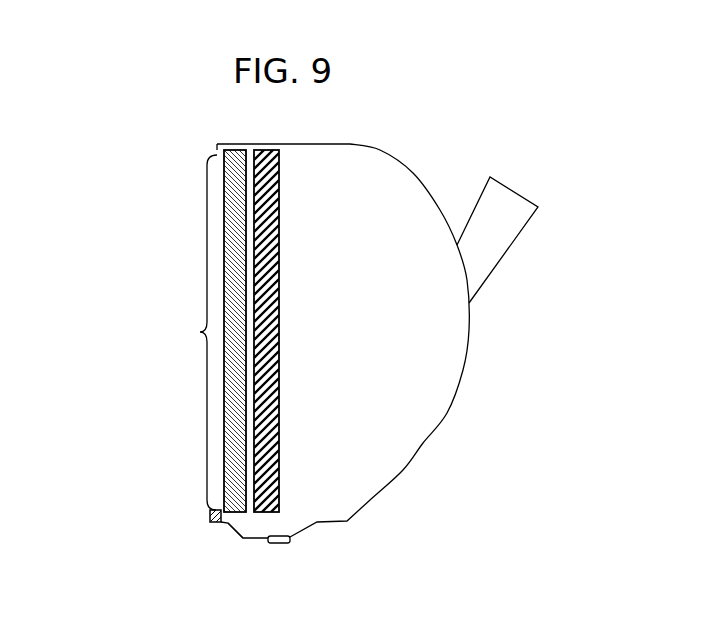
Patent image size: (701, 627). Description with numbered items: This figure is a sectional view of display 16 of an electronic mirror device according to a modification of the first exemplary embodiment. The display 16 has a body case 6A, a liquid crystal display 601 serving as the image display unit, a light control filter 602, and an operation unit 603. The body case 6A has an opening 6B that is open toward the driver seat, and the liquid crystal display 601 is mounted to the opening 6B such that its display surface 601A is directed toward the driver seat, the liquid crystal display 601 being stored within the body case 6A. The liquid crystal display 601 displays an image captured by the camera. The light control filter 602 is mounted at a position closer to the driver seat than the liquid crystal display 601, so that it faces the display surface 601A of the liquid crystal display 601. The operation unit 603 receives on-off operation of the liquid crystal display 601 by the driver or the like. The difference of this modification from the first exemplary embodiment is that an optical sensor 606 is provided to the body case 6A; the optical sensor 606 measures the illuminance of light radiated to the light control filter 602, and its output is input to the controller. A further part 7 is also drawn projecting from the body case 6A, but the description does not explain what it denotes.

The body case 6A is at (403, 470).
The opening 6B is at (188, 332).
The grip portion 7 is at (520, 202).
The display 16 is at (213, 542).
The liquid crystal display 601 is at (250, 175).
The display surface 601A is at (220, 150).
The light control filter 602 is at (233, 513).
The operation unit 603 is at (290, 540).
The optical sensor 606 is at (210, 512).